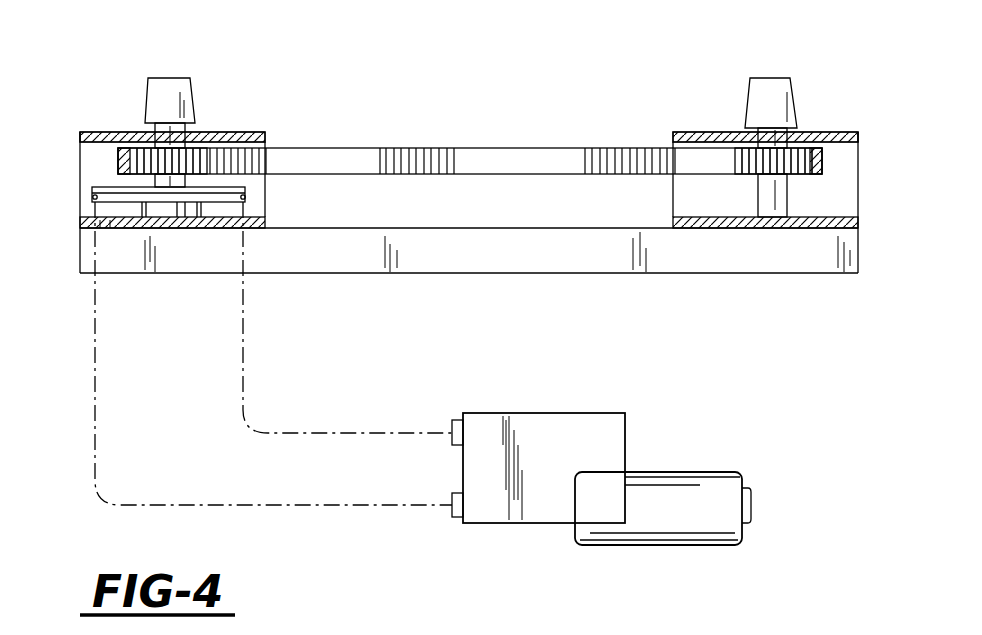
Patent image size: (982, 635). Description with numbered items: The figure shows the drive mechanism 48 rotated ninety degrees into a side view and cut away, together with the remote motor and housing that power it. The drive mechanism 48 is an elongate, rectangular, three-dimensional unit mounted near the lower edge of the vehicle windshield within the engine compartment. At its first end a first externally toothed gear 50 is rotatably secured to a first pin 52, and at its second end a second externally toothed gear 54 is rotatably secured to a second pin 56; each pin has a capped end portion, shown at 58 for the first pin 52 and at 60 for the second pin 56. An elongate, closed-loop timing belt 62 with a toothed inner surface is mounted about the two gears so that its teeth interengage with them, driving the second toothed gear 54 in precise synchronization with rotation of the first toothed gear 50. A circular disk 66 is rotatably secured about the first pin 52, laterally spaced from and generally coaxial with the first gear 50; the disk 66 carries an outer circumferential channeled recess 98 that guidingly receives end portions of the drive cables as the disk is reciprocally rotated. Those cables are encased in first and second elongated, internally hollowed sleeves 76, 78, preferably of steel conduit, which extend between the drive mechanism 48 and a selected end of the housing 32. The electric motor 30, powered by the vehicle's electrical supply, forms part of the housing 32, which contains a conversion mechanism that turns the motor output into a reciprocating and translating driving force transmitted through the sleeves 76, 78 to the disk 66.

The electric motor 30 is at (680, 495).
The housing 32 is at (562, 427).
The drive mechanism 48 is at (397, 110).
The first externally toothed gear 50 is at (136, 147).
The first pin 52 is at (200, 133).
The second externally toothed gear 54 is at (800, 176).
The second pin 56 is at (738, 135).
The capped end portion of first pin 58 is at (165, 95).
The capped end portion of second pin 60 is at (772, 97).
The timing belt 62 is at (571, 160).
The circular disk 66 is at (115, 187).
The first sleeve 76 is at (318, 508).
The second sleeve 78 is at (326, 432).
The channeled recess 98 is at (115, 230).